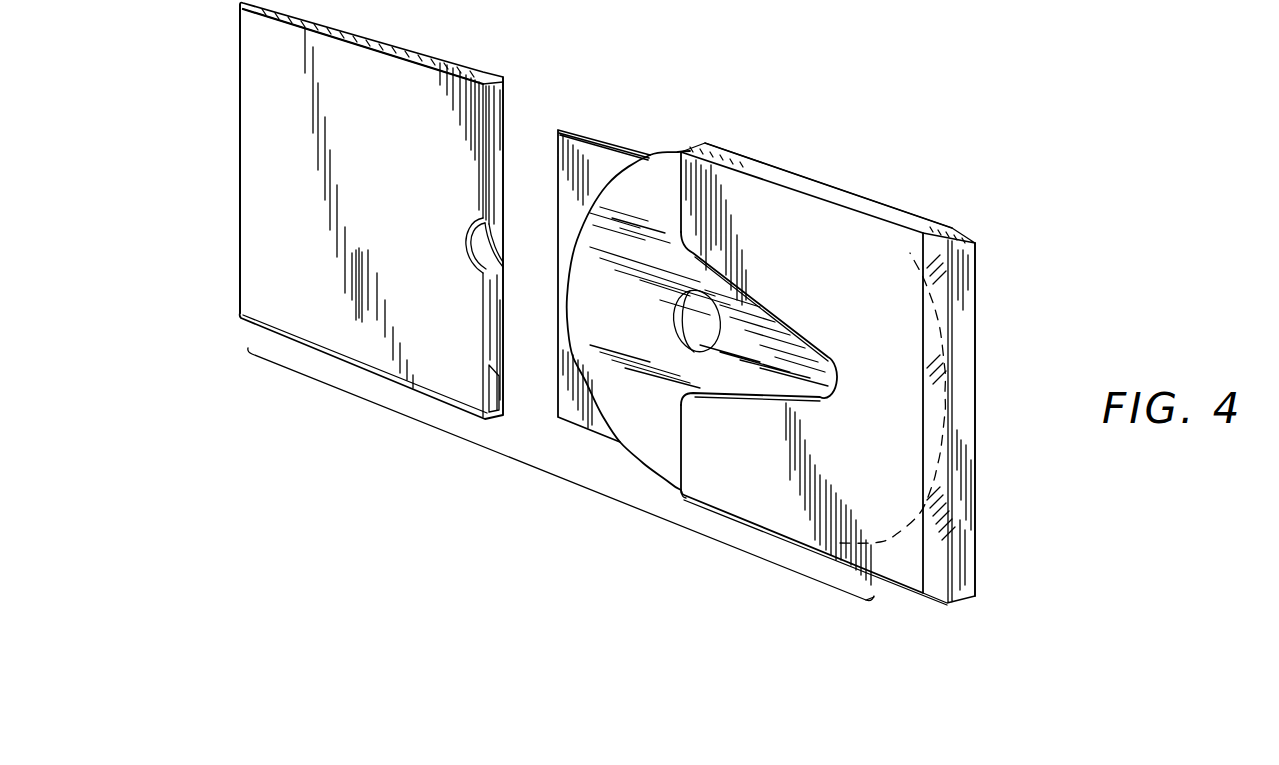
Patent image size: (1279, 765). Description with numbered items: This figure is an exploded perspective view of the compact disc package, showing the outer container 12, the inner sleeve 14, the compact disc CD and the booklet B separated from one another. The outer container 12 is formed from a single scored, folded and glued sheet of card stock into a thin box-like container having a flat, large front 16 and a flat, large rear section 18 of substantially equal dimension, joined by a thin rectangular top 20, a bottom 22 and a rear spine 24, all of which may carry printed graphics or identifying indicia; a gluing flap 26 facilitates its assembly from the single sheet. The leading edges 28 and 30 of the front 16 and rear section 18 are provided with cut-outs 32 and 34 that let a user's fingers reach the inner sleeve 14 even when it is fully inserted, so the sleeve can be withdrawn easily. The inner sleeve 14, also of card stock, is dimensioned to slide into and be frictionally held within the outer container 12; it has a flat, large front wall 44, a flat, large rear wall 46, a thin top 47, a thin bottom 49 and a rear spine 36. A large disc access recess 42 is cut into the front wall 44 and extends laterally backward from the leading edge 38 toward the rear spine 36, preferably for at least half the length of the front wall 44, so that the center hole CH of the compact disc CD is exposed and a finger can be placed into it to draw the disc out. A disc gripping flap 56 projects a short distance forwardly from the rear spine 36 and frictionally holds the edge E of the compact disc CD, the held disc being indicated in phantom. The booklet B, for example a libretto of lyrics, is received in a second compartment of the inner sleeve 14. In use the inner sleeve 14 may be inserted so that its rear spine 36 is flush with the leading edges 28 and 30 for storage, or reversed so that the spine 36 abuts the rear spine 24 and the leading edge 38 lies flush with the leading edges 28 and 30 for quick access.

The outer container 12 is at (395, 75).
The inner sleeve 14 is at (865, 236).
The front 16 is at (392, 208).
The rear section 18 is at (504, 109).
The top 20 is at (457, 63).
The bottom 22 is at (270, 337).
The rear spine 24 is at (240, 272).
The gluing flap 26 is at (498, 387).
The leading edge of front 28 is at (482, 294).
The leading edge of rear 30 is at (503, 181).
The cut-out 32 is at (473, 251).
The cut-out 34 is at (483, 233).
The rear spine of inner sleeve 36 is at (970, 473).
The leading edge of inner sleeve 38 is at (681, 478).
The disc access recess 42 is at (742, 398).
The front wall 44 is at (785, 372).
The rear wall 46 is at (862, 199).
The top 47 is at (767, 176).
The bottom 49 is at (908, 587).
The disc gripping flap 56 is at (940, 568).
The booklet B is at (612, 157).
The compact disc CD is at (638, 447).
The center hole CH is at (695, 311).
The edge of compact disc E is at (935, 320).